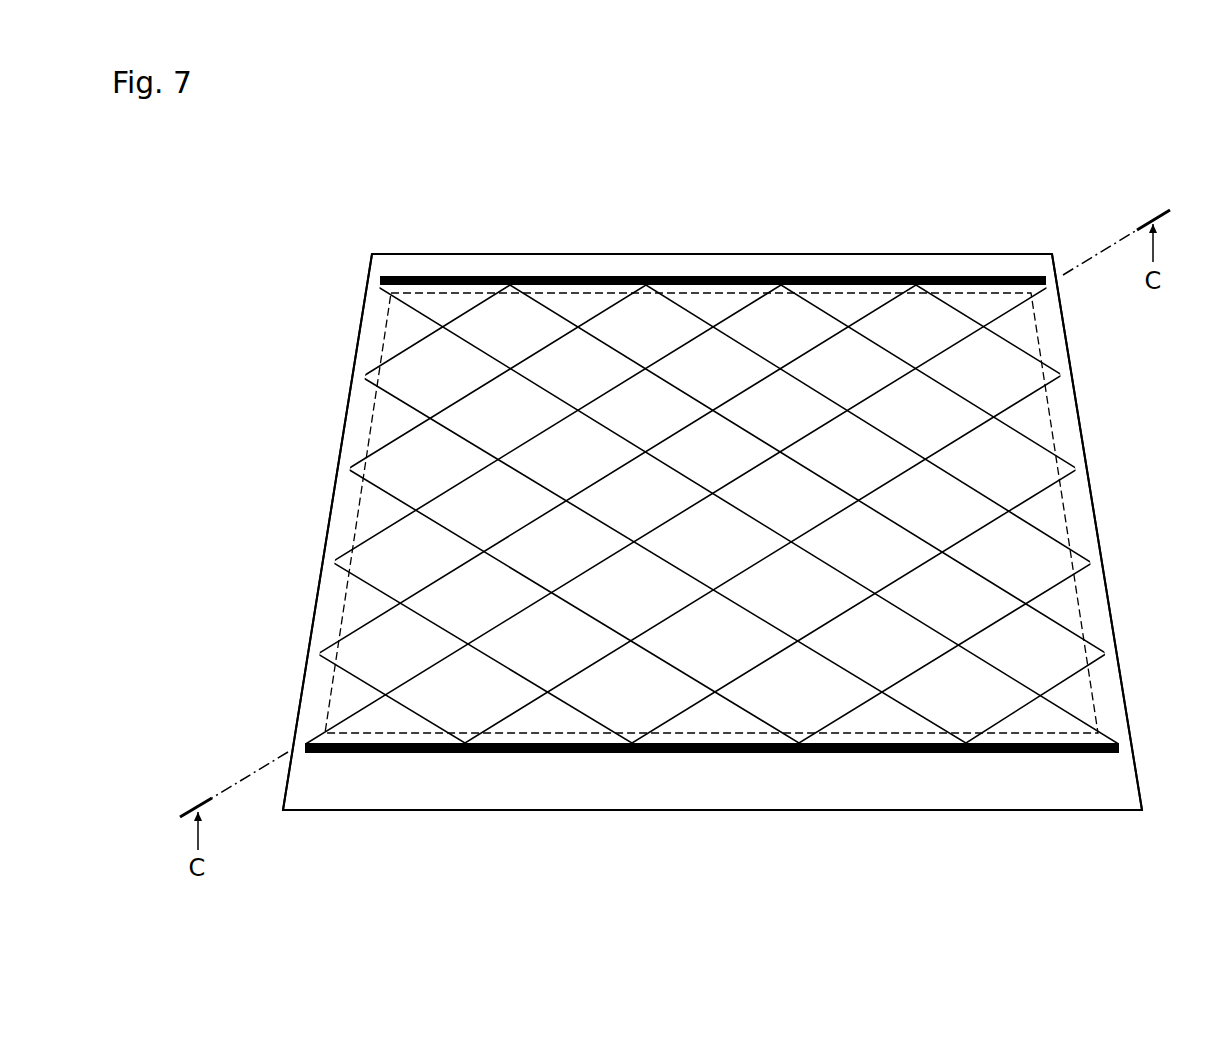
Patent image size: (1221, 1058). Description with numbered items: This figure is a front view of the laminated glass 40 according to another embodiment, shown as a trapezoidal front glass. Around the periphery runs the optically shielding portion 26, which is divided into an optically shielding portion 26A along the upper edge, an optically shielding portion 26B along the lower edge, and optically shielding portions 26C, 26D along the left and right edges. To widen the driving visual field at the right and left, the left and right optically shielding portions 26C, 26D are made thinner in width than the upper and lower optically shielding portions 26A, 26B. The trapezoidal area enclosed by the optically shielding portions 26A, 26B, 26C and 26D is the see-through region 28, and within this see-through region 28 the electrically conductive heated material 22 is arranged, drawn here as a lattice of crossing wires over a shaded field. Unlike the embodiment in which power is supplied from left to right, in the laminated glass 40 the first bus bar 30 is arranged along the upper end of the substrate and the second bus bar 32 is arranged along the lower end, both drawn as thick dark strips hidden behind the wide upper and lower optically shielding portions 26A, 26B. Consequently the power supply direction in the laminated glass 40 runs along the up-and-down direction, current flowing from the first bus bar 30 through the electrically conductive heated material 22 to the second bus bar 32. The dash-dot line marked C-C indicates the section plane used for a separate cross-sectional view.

The electrically conductive heated material 22 is at (460, 315).
The optically shielding portion 26 is at (868, 272).
The optically shielding portion along the upper edge 26A is at (590, 265).
The optically shielding portion along the lower edge 26B is at (762, 758).
The optically shielding portion along the left edge 26C is at (320, 572).
The optically shielding portion along the right edge 26D is at (1099, 574).
The see-through region 28 is at (697, 549).
The first bus bar 30 is at (735, 276).
The second bus bar 32 is at (643, 753).
The laminated glass 40 is at (1022, 230).